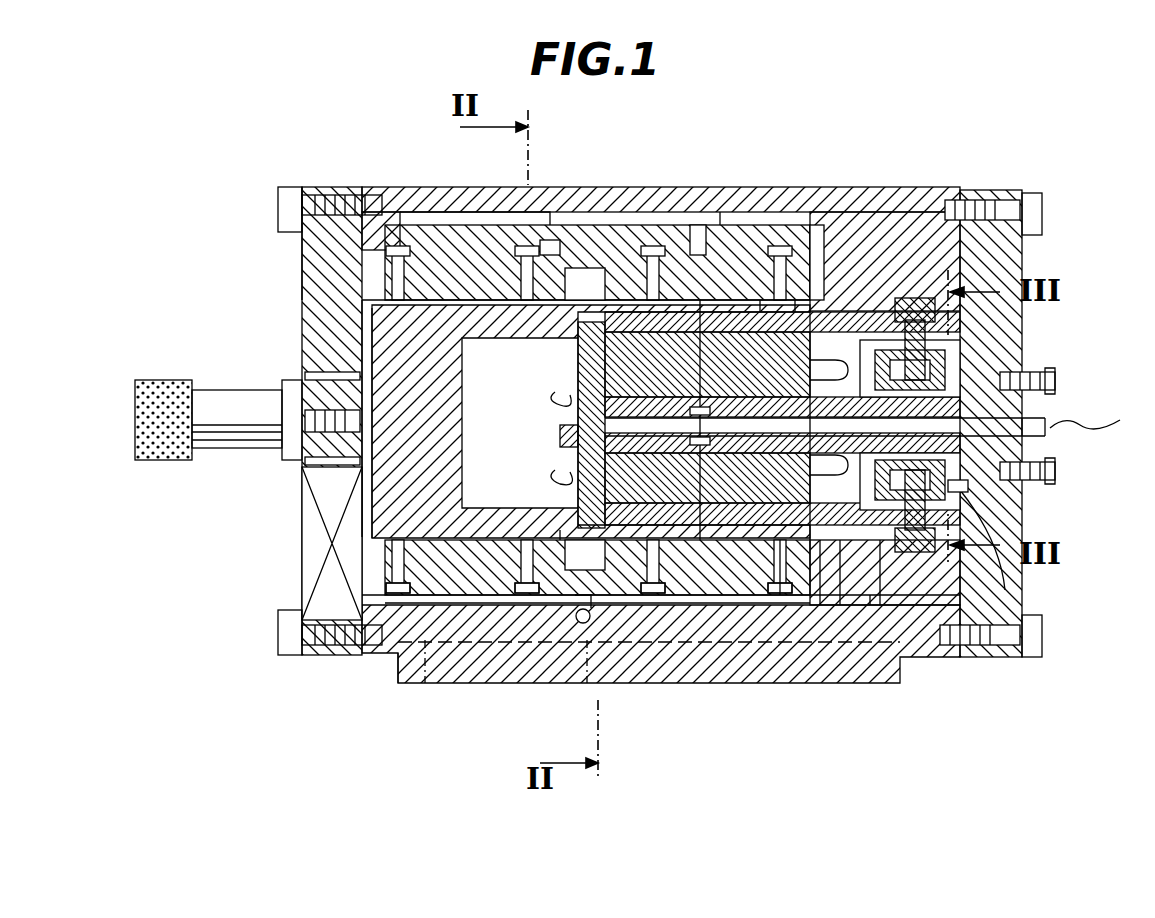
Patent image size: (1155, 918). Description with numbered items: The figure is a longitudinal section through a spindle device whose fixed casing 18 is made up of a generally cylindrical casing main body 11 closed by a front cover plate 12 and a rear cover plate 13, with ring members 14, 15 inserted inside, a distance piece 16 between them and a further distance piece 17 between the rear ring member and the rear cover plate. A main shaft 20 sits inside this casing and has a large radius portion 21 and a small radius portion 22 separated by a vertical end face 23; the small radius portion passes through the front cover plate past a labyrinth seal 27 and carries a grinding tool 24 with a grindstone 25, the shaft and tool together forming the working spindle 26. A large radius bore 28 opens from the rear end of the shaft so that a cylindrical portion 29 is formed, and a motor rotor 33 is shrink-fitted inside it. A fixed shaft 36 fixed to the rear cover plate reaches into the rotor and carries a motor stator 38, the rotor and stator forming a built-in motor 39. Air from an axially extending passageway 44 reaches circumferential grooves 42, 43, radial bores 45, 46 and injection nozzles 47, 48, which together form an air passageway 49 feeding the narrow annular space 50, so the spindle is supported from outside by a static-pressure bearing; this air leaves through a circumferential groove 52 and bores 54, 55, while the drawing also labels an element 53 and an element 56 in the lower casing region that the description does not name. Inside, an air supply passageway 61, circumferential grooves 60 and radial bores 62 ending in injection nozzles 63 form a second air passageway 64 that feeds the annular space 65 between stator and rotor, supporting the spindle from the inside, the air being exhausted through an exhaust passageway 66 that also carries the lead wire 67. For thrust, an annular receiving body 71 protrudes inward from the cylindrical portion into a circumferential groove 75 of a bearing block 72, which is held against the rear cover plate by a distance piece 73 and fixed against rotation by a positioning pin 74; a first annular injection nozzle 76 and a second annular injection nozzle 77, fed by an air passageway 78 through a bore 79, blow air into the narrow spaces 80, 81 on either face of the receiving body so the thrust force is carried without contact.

The casing main body 11 is at (860, 198).
The front cover plate 12 is at (310, 265).
The rear cover plate 13 is at (1015, 256).
The ring member 14 is at (448, 540).
The ring member 15 is at (715, 540).
The distance piece 16 is at (645, 565).
The distance piece 17 is at (860, 572).
The fixed casing 18 is at (366, 663).
The main shaft 20 is at (370, 540).
The large radius portion 21 is at (418, 545).
The small radius portion 22 is at (308, 458).
The vertical end face 23 is at (365, 522).
The grinding tool 24 is at (230, 440).
The grindstone 25 is at (168, 380).
The working spindle 26 is at (270, 376).
The labyrinth seal 27 is at (320, 364).
The large radius bore 28 is at (470, 340).
The cylindrical portion 29 is at (895, 545).
The motor rotor 33 is at (782, 560).
The fixed shaft 36 is at (1040, 472).
The motor stator 38 is at (690, 490).
The built-in motor 39 is at (515, 590).
The circumferential grooves 42 is at (496, 575).
The circumferential grooves 43 is at (760, 590).
The axially extending passageway 44 is at (740, 222).
The radial bores 45 is at (545, 235).
The radial bores 46 is at (793, 325).
The injection nozzles 47 is at (445, 212).
The injection nozzles 48 is at (817, 270).
The air passageway 49 is at (378, 205).
The annular space 50 is at (698, 262).
The circumferential groove 52 is at (583, 268).
The passage 53 is at (560, 540).
The bore 54 is at (355, 582).
The bore 55 is at (826, 548).
The ball 56 is at (590, 622).
The circumferential grooves 60 is at (555, 478).
The air supply passageway 61 is at (1048, 432).
The radial bores 62 is at (580, 360).
The injection nozzles 63 is at (762, 325).
The second air passageway 64 is at (1000, 478).
The annular space 65 is at (555, 398).
The exhaust passageway 66 is at (560, 440).
The lead wire 67 is at (1055, 415).
The receiving body 71 is at (908, 330).
The bearing block 72 is at (1010, 500).
The distance piece 73 is at (829, 438).
The positioning pin 74 is at (1000, 562).
The circumferential groove 75 is at (912, 530).
The first annular injection nozzle 76 is at (928, 335).
The second annular injection nozzle 77 is at (990, 645).
The air passageway 78 is at (1005, 380).
The bore 79 is at (985, 352).
The narrow space 80 is at (905, 552).
The narrow space 81 is at (980, 215).